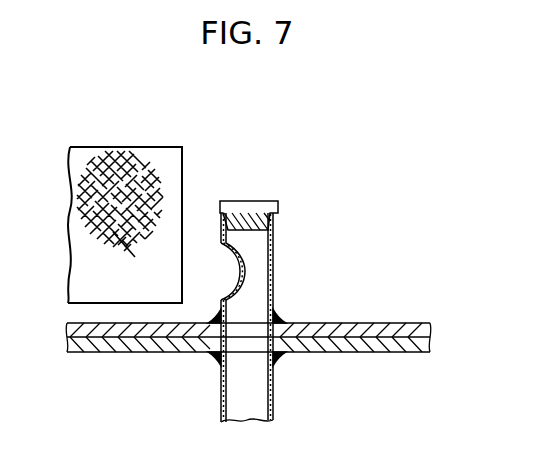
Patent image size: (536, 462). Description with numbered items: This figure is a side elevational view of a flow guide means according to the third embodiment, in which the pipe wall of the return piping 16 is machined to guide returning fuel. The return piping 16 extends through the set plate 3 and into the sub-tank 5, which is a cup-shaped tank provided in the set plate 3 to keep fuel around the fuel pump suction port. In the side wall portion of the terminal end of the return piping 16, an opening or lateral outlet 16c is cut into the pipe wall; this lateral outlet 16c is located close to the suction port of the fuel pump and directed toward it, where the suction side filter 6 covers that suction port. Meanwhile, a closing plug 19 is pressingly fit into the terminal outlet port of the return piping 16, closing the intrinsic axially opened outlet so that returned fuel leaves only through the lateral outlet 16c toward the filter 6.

The suction side filter 6 is at (120, 147).
The lateral outlet 16c is at (236, 270).
The closing plug 19 is at (240, 201).
The sub-tank 5 is at (391, 323).
The set plate 3 is at (391, 352).
The return piping 16 is at (273, 388).